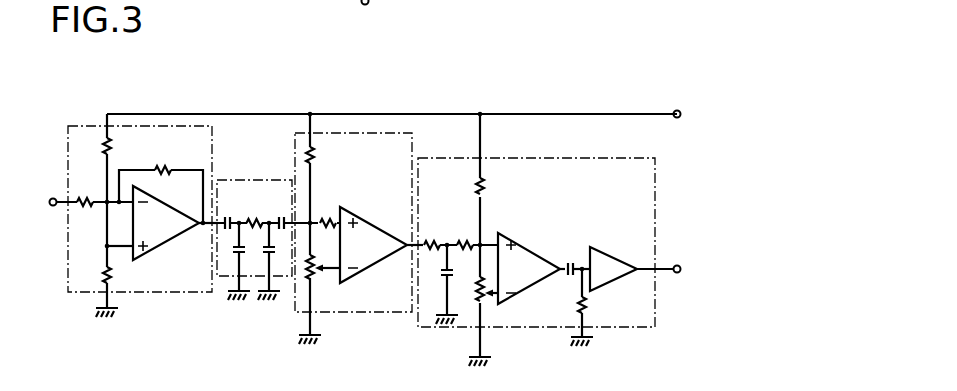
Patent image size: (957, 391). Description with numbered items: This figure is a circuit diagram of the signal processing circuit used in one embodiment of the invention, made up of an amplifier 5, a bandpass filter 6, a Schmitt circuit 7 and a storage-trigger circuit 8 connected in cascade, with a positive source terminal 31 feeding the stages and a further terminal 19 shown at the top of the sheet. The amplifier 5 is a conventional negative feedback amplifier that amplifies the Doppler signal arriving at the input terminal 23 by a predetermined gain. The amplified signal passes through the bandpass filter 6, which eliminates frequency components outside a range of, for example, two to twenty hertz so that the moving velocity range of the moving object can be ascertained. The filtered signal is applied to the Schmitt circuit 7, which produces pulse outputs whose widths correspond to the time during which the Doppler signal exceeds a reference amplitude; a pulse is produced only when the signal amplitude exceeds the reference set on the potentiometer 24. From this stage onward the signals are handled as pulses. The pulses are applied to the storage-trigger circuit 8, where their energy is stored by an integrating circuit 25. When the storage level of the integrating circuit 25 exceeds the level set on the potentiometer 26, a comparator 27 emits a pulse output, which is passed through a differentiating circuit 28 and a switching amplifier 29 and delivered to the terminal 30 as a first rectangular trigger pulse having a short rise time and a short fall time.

The amplifier 5 is at (90, 127).
The bandpass filter 6 is at (233, 179).
The Schmitt circuit 7 is at (359, 210).
The storage-trigger circuit 8 is at (546, 240).
The terminal 19 is at (368, 3).
The input terminal 23 is at (52, 196).
The potentiometer 24 is at (313, 279).
The integrating circuit 25 is at (435, 257).
The potentiometer 26 is at (488, 309).
The comparator 27 is at (518, 255).
The differentiating circuit 28 is at (573, 262).
The switching amplifier 29 is at (608, 262).
The terminal 30 is at (678, 265).
The positive source terminal 31 is at (674, 110).